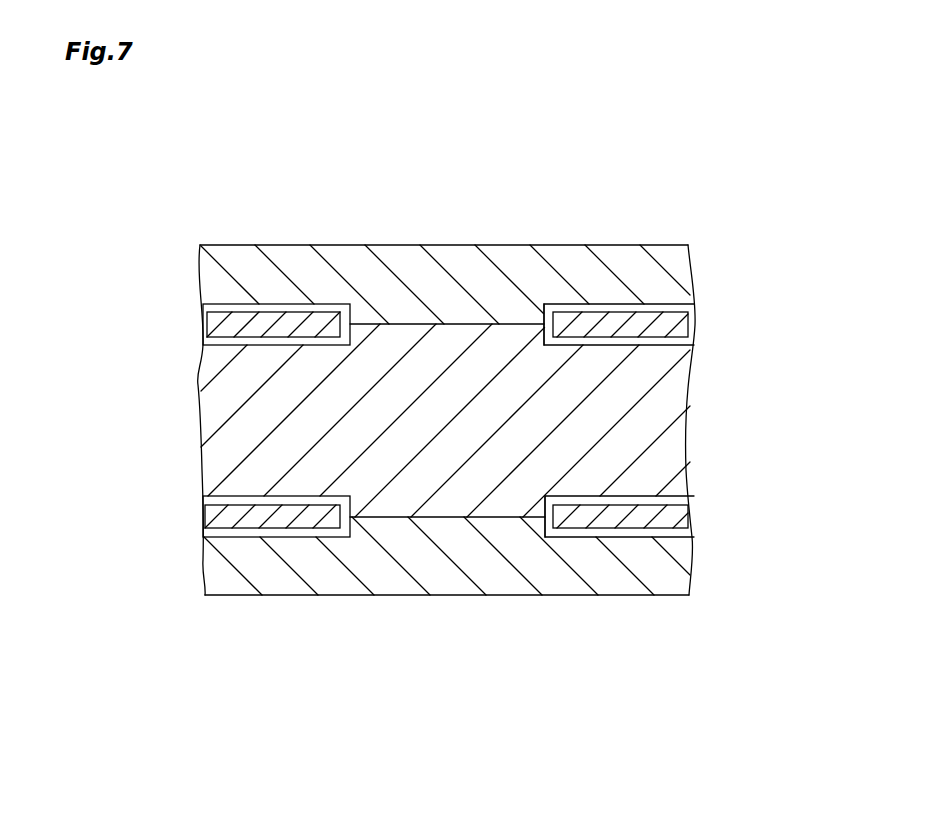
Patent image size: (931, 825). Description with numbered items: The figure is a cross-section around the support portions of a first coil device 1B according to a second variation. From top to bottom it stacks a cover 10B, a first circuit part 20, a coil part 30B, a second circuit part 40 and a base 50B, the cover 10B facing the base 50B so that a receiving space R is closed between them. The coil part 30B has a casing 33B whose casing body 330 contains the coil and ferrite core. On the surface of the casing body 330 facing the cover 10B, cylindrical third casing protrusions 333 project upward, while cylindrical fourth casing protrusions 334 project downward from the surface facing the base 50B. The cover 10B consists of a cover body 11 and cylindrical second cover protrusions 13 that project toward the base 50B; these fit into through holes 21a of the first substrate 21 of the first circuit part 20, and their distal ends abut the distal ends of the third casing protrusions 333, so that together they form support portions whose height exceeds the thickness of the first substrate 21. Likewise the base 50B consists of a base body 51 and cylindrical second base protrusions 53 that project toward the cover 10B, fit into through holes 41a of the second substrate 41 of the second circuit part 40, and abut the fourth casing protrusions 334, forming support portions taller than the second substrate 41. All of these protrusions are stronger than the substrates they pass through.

The first coil device 1B is at (697, 182).
The cover 10B is at (502, 252).
The cover body 11 is at (241, 270).
The second cover protrusions 13 is at (385, 315).
The first circuit part 20 is at (450, 264).
The first substrate 21 is at (598, 264).
The through holes 21a is at (535, 322).
The receiving space R is at (203, 342).
The coil part 30B is at (443, 423).
The casing body 330 is at (386, 420).
The casing 33B is at (195, 378).
The third casing protrusions 333 is at (460, 327).
The fourth casing protrusions 334 is at (456, 512).
The second circuit part 40 is at (495, 579).
The second substrate 41 is at (599, 580).
The through holes 41a is at (525, 525).
The base 50B is at (504, 591).
The base body 51 is at (243, 567).
The second base protrusions 53 is at (390, 525).